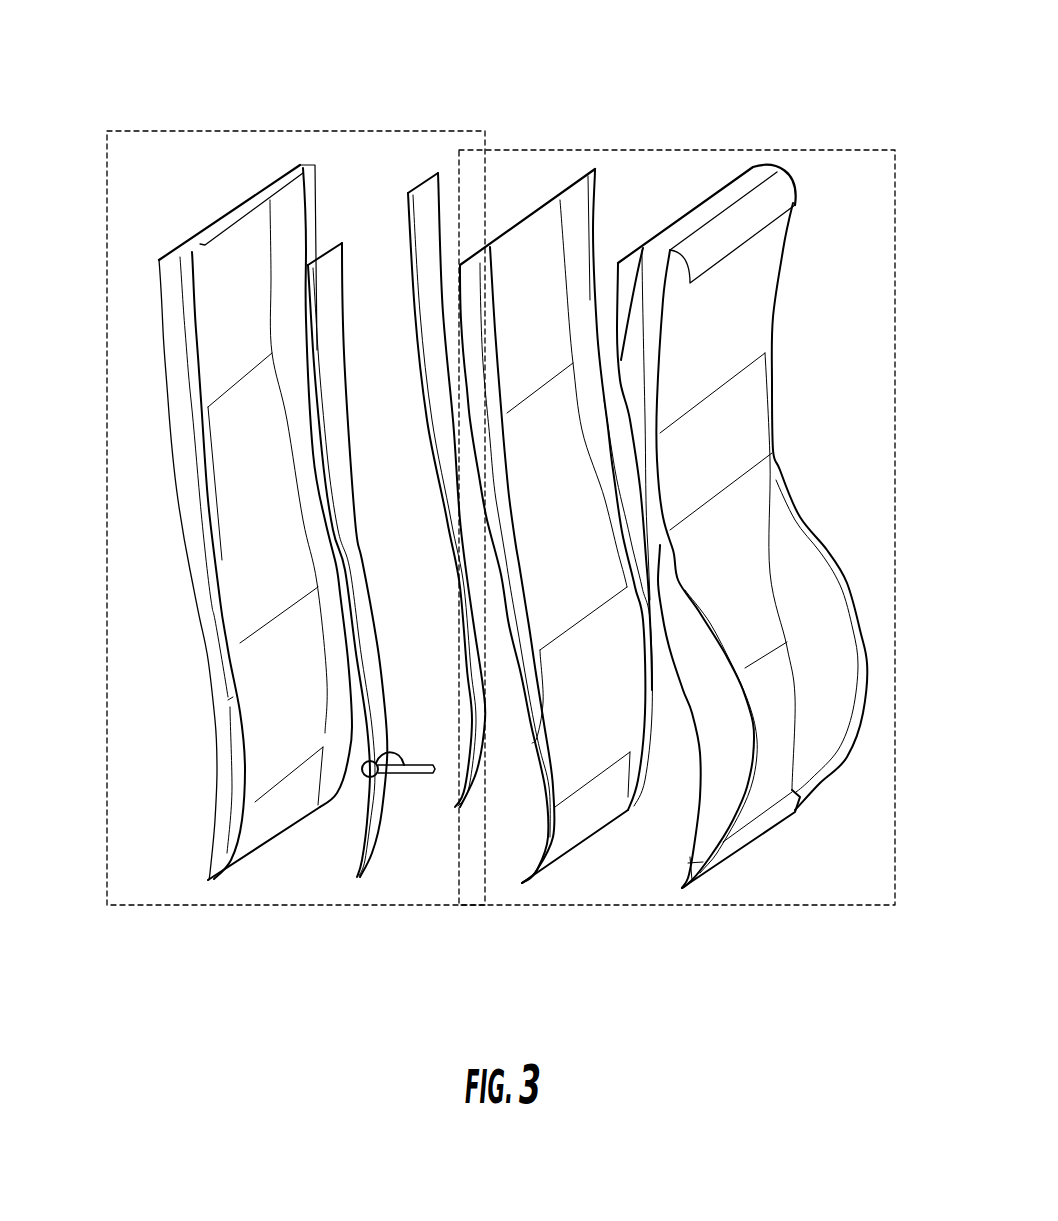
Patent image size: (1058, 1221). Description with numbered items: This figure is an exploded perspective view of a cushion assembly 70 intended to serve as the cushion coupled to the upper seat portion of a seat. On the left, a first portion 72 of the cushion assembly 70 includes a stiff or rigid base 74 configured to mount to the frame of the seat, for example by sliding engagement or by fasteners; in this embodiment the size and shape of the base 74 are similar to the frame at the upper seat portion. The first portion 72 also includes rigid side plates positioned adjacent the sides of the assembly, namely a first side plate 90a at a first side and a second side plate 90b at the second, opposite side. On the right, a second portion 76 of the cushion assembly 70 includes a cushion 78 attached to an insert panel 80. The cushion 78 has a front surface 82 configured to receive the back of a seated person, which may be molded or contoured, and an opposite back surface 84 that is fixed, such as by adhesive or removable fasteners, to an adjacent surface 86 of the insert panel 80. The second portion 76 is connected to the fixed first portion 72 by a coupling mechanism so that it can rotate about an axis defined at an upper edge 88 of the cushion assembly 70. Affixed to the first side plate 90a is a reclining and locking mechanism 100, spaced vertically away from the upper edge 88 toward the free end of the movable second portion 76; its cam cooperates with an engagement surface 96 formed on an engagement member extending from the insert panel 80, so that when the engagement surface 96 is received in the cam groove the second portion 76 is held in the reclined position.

The cushion assembly 70 is at (118, 91).
The first portion 72 is at (103, 497).
The base 74 is at (219, 606).
The second portion 76 is at (914, 312).
The cushion 78 is at (758, 427).
The insert panel 80 is at (537, 258).
The front surface 82 is at (742, 573).
The back surface 84 is at (681, 707).
The surface 86 is at (553, 400).
The upper edge 88 is at (520, 213).
The first side plate 90a is at (328, 427).
The second side plate 90b is at (420, 270).
The engagement surface 96 is at (532, 743).
The reclining and locking mechanism 100 is at (354, 783).